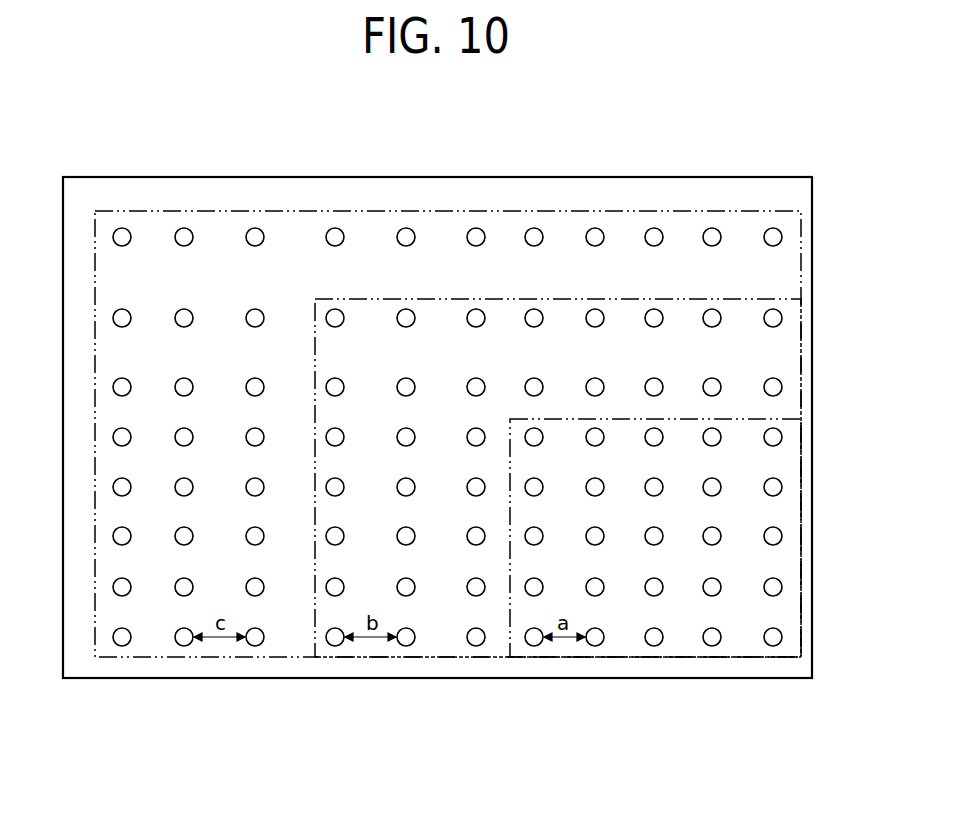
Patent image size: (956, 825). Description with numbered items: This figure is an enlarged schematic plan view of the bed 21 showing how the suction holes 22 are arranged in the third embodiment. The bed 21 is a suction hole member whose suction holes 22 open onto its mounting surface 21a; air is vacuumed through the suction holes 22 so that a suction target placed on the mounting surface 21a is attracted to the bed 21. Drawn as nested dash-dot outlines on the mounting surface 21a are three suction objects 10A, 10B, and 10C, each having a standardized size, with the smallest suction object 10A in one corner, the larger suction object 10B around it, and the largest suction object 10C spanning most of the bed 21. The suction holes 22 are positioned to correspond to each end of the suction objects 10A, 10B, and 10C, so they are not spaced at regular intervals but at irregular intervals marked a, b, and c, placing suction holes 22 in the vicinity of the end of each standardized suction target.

The bed 21 is at (506, 177).
The mounting surface 21a is at (448, 435).
The suction object 10C is at (134, 657).
The suction object 10B is at (388, 657).
The suction object 10A is at (600, 657).
The suction holes 22 is at (335, 645).